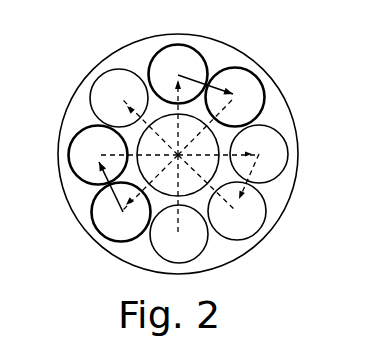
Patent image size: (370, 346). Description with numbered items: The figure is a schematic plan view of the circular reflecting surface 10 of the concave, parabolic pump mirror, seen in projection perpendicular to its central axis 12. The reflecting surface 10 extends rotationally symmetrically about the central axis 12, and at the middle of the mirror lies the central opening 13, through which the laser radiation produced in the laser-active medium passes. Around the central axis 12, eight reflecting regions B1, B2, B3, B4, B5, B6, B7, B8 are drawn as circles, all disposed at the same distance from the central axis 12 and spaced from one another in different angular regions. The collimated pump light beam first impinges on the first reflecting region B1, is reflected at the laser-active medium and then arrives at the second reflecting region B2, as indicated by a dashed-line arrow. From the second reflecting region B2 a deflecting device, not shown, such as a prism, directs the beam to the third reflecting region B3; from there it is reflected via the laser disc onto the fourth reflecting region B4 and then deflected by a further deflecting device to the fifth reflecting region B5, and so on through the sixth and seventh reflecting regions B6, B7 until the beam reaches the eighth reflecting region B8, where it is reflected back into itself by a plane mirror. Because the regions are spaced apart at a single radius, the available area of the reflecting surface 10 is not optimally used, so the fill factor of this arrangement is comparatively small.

The reflecting surface 10 is at (277, 113).
The central axis 12 is at (183, 163).
The central opening 13 is at (122, 123).
The first reflecting region B1 is at (179, 234).
The second reflecting region B2 is at (178, 74).
The third reflecting region B3 is at (235, 97).
The fourth reflecting region B4 is at (121, 212).
The fifth reflecting region B5 is at (98, 155).
The sixth reflecting region B6 is at (259, 154).
The seventh reflecting region B7 is at (237, 211).
The eighth reflecting region B8 is at (112, 94).